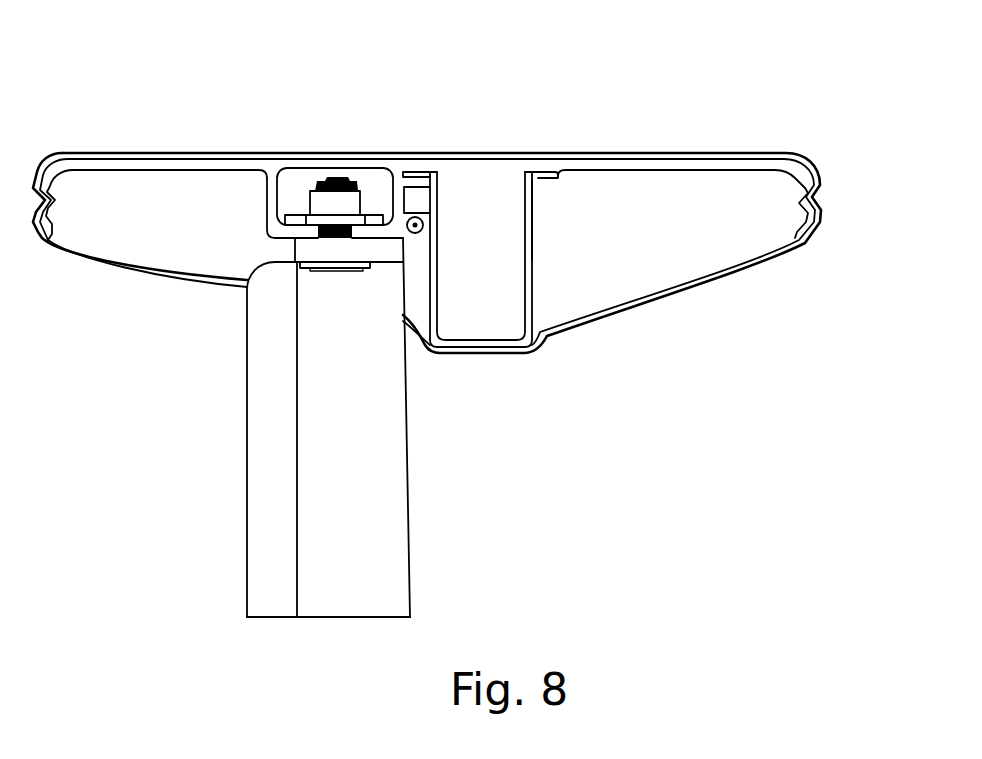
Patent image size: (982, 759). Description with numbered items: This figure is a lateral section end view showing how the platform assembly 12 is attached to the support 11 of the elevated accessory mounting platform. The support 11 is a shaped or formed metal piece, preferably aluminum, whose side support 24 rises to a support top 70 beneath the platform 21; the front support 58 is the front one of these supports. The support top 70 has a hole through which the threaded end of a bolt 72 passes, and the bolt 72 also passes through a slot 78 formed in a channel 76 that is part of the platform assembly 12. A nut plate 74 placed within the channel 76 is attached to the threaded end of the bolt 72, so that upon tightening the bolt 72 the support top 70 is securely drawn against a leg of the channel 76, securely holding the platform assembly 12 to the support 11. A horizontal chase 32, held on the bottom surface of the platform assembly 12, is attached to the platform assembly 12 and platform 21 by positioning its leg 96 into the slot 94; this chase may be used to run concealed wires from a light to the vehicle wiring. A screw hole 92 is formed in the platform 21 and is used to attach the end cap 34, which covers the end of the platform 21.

The support 11 is at (432, 512).
The platform assembly 12 is at (743, 102).
The platform 21 is at (192, 172).
The side support 24 is at (395, 438).
The horizontal chase 32 is at (535, 248).
The end cap 34 is at (723, 270).
The front support 58 is at (247, 372).
The support top 70 is at (295, 240).
The bolt 72 is at (332, 178).
The nut plate 74 is at (303, 205).
The channel 76 is at (267, 192).
The slot 78 is at (373, 264).
The screw hole 92 is at (415, 238).
The slot 94 is at (537, 170).
The leg 96 is at (539, 206).